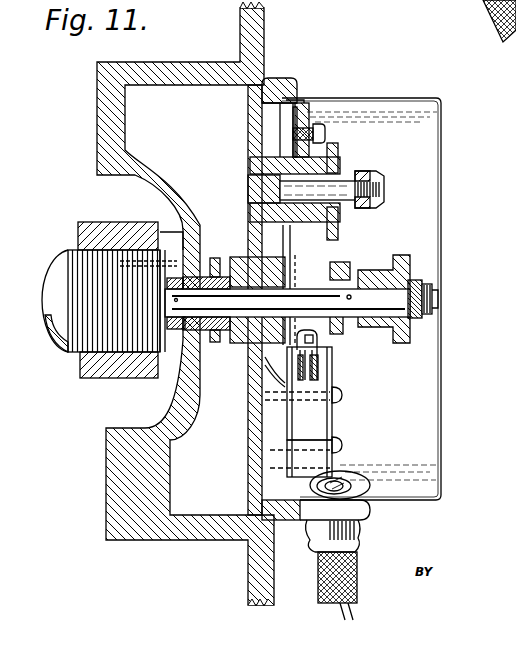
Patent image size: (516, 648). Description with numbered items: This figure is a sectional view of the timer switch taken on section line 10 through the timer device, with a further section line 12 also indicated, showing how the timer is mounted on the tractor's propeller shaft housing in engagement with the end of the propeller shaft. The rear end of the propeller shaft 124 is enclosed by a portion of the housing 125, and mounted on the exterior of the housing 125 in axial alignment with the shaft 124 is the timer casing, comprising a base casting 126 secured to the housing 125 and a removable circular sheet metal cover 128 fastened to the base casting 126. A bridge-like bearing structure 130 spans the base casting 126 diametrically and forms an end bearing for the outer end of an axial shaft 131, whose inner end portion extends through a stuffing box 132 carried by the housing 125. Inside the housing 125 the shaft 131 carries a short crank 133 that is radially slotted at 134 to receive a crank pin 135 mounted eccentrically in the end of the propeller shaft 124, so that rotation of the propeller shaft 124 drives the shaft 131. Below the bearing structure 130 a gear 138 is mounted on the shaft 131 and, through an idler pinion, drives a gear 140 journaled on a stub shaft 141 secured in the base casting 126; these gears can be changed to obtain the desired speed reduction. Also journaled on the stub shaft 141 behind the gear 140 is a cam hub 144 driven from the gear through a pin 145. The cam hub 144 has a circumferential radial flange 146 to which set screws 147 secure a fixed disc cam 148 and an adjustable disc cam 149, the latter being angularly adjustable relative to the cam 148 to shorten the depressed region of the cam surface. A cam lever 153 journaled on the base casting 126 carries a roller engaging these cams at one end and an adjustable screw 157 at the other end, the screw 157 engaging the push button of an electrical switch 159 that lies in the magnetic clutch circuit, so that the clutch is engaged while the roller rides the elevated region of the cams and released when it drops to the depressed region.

The section line 10 is at (430, 97).
The section line 12 is at (183, 232).
The propeller shaft 124 is at (60, 352).
The housing 125 is at (190, 86).
The base casting 126 is at (270, 80).
The sheet metal cover 128 is at (438, 160).
The bearing structure 130 is at (385, 256).
The axial shaft 131 is at (385, 330).
The stuffing box 132 is at (230, 342).
The crank 133 is at (173, 331).
The radial slot 134 is at (182, 272).
The crank pin 135 is at (207, 224).
The gear 138 is at (340, 267).
The gear 140 is at (338, 233).
The stub shaft 141 is at (385, 192).
The cam hub 144 is at (252, 168).
The pin 145 is at (337, 167).
The radial flange 146 is at (299, 110).
The set screws 147 is at (324, 130).
The fixed disc cam 148 is at (306, 112).
The adjustable disc cam 149 is at (313, 128).
The cam lever 153 is at (318, 335).
The adjustable screw 157 is at (318, 372).
The electrical switch 159 is at (320, 423).